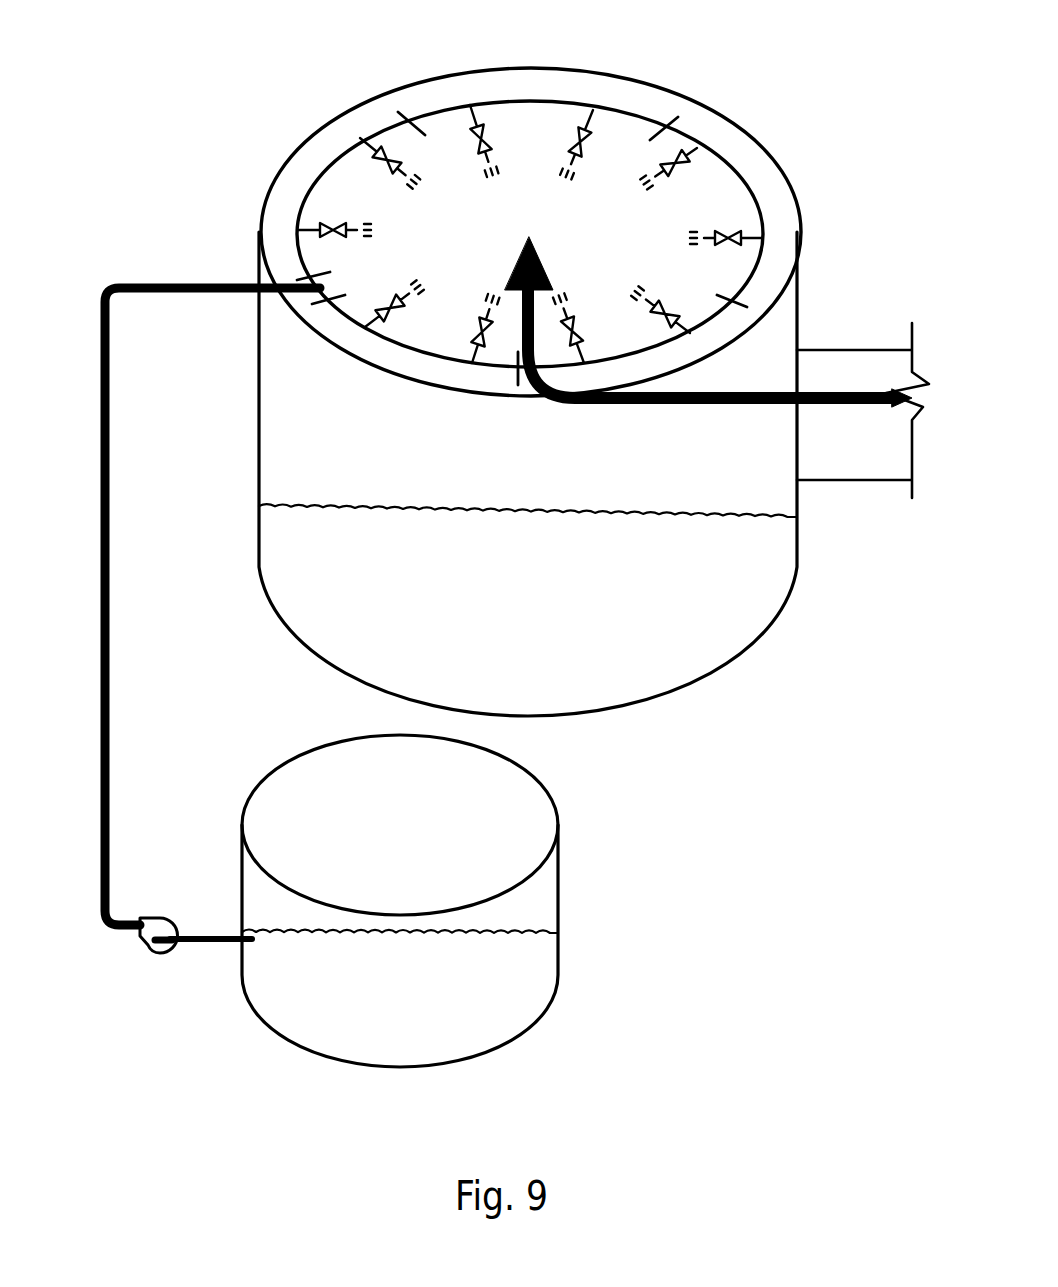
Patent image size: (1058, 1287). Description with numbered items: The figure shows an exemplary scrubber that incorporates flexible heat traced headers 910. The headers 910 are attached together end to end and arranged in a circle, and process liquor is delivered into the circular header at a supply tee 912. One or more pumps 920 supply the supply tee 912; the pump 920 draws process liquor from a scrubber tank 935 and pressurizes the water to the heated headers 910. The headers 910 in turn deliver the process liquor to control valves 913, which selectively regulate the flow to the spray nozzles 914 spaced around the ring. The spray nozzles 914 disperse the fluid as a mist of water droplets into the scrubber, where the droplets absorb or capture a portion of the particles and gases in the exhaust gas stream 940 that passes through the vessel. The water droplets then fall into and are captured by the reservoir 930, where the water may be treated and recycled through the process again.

The flexible heat traced header 910 is at (650, 103).
The supply tee 912 is at (300, 283).
The control valve 913 is at (566, 132).
The spray nozzle 914 is at (410, 168).
The pump 920 is at (150, 953).
The reservoir 930 is at (775, 547).
The scrubber tank 935 is at (536, 972).
The exhaust gas stream 940 is at (815, 392).